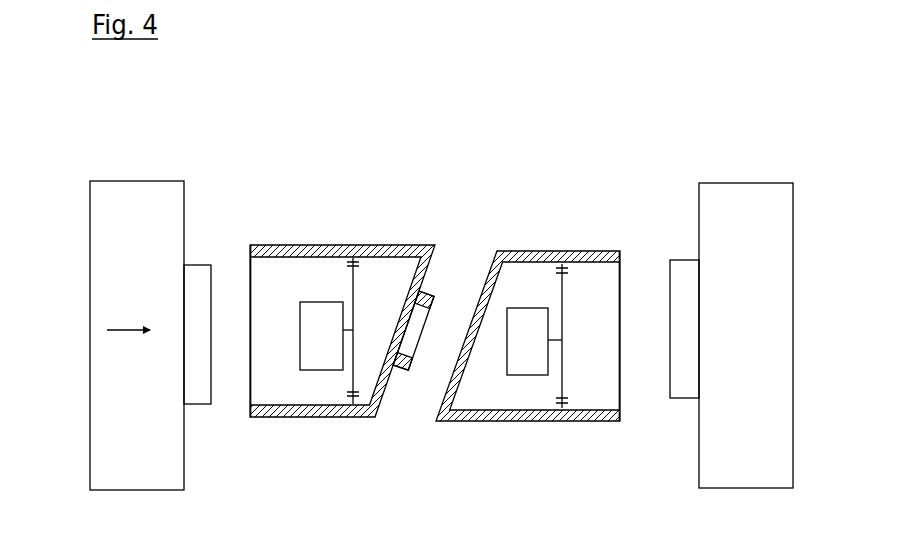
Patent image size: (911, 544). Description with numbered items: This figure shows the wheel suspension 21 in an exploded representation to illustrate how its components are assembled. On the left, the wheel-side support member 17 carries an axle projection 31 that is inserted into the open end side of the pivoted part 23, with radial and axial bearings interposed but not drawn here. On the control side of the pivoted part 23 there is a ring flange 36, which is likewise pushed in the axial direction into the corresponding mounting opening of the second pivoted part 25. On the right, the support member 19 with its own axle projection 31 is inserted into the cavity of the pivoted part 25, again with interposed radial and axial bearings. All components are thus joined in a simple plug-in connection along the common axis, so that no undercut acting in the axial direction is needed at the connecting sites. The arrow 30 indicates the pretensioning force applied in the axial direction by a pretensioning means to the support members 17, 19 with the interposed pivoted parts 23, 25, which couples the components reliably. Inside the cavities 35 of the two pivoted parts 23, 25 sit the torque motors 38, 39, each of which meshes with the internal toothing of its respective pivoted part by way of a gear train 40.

The wheel-side support member 17 is at (157, 454).
The support member 19 is at (759, 455).
The deformation device 21 is at (406, 122).
The pivoted part 23 is at (318, 245).
The pivoted part 25 is at (565, 251).
The force direction 30 is at (176, 259).
The axle projection 31 is at (199, 387).
The cavity 35 is at (327, 398).
The ring flange 36 is at (393, 371).
The torque motor 38 is at (336, 358).
The torque motor 39 is at (542, 338).
The gear train 40 is at (354, 290).